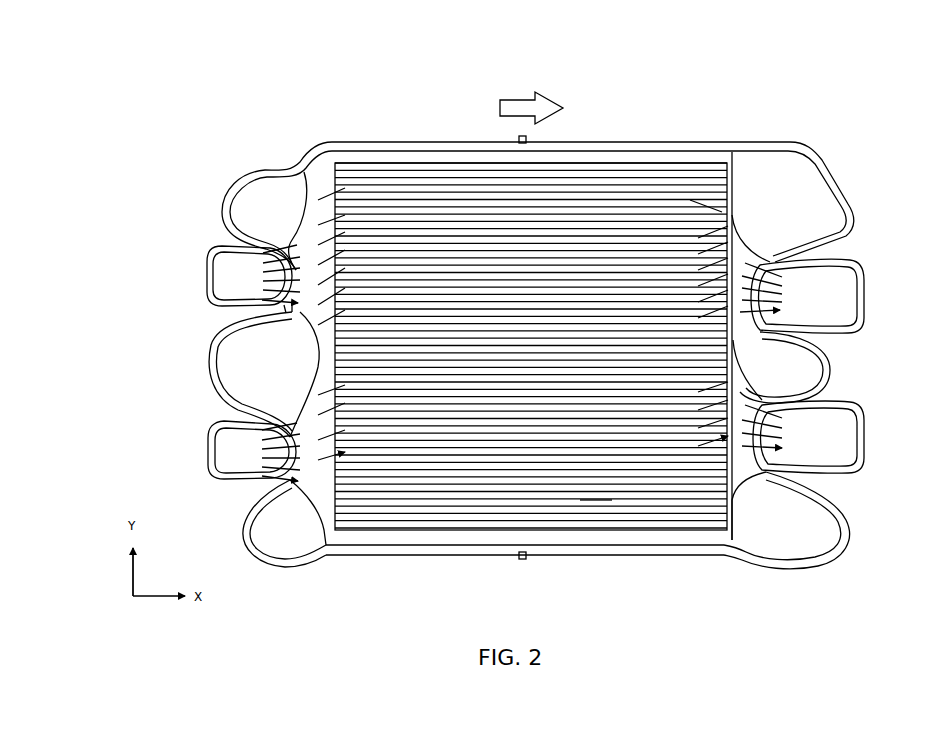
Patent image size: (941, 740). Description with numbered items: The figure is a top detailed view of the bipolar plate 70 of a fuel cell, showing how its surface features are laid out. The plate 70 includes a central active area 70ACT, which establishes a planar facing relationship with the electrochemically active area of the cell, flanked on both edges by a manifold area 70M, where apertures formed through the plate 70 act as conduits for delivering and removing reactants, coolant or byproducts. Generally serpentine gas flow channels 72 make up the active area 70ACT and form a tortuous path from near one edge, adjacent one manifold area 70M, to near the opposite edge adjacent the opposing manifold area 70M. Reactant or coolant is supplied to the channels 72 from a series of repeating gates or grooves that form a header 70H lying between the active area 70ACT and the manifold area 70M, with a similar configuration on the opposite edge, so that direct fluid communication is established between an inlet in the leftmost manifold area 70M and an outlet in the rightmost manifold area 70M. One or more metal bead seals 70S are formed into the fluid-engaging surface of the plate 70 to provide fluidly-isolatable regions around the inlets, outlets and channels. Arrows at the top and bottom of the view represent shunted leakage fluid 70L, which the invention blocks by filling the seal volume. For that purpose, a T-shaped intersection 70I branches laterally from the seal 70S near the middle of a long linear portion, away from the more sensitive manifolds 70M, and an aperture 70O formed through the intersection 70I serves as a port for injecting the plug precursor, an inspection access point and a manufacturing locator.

The bipolar plate 70 is at (676, 110).
The active area 70ACT is at (720, 575).
The manifold area 70M is at (300, 192).
The shunted leakage fluid 70L is at (262, 588).
The seal 70S is at (334, 143).
The header 70H is at (535, 342).
The intersection 70I is at (519, 558).
The aperture 70O is at (527, 558).
The gas flow channels 72 is at (612, 505).